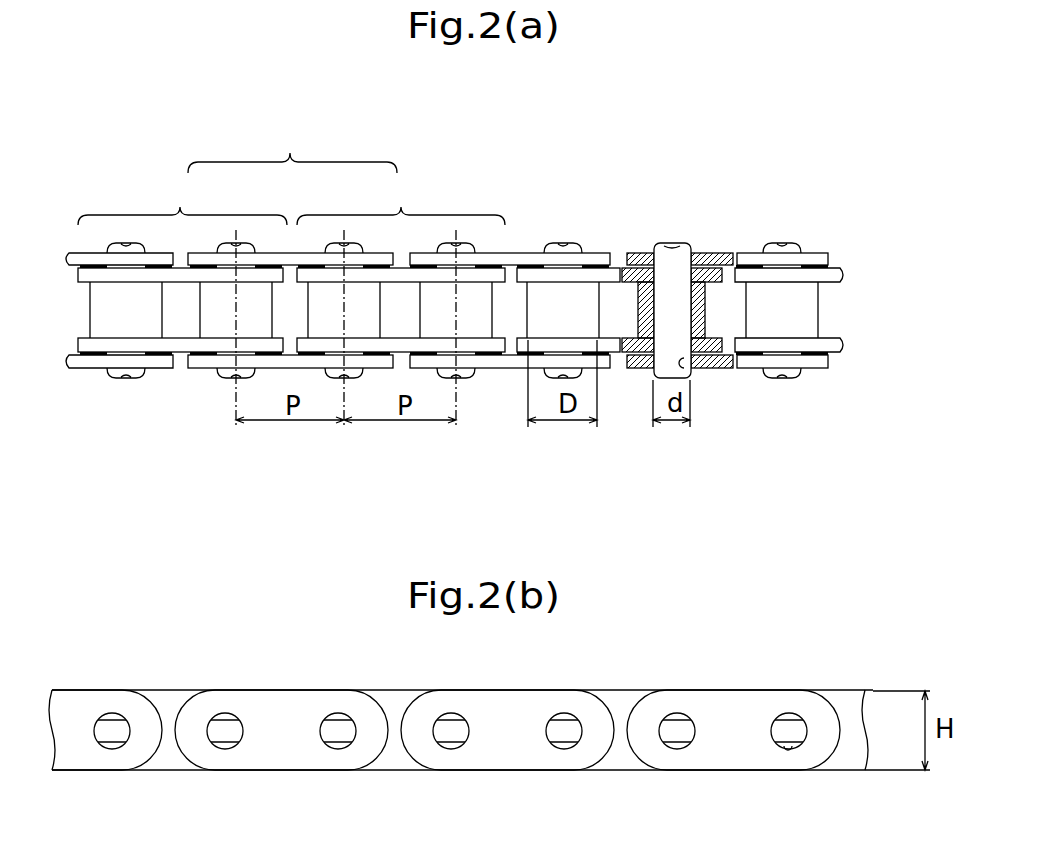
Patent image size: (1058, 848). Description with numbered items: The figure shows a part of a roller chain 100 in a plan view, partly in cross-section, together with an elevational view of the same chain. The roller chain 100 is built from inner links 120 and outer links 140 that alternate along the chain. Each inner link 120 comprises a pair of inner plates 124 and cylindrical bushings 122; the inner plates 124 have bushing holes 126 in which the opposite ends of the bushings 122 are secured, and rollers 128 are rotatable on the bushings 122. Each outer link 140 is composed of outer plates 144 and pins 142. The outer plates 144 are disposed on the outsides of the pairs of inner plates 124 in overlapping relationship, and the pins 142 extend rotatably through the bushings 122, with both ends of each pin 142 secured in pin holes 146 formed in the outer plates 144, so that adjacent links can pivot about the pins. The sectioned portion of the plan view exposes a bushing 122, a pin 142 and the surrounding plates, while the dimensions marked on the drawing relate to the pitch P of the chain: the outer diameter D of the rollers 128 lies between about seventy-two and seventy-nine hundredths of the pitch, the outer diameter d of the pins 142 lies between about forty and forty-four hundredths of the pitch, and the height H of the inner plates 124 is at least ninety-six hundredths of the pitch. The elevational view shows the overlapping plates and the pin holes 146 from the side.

In FIG. 2A, the roller chain 100 is at (177, 410).
In FIG. 2A, the inner link 120 is at (291, 199).
In FIG. 2A, the outer link 140 is at (292, 148).
In FIG. 2A, the cylindrical bushing 122 is at (710, 308).
In FIG. 2A, the inner plate 124 is at (493, 273).
In FIG. 2A, the bushing hole 126 is at (655, 250).
In FIG. 2A, the roller 128 is at (637, 312).
In FIG. 2A, the pin 142 is at (670, 243).
In FIG. 2A, the outer plate 144 is at (813, 262).
In FIG. 2A, the pin hole 146 is at (690, 377).
In FIG. 2B, the pin hole 146 is at (788, 750).